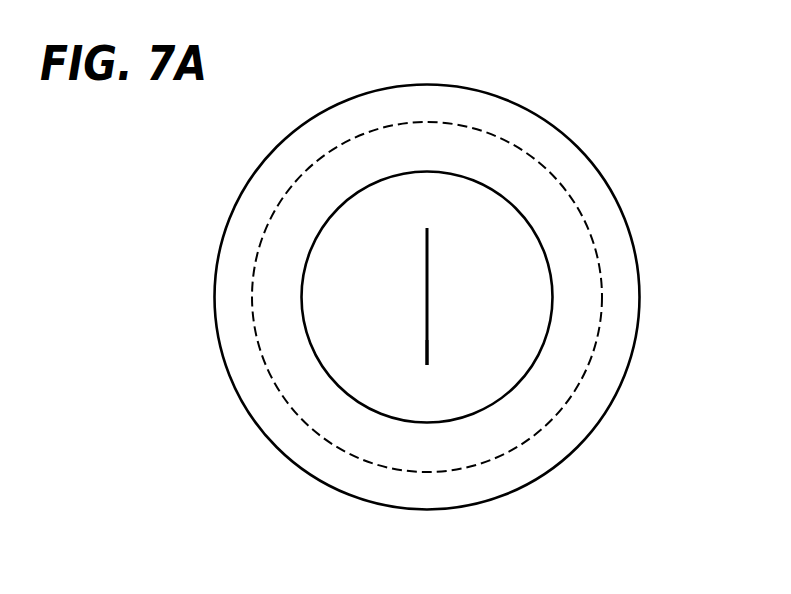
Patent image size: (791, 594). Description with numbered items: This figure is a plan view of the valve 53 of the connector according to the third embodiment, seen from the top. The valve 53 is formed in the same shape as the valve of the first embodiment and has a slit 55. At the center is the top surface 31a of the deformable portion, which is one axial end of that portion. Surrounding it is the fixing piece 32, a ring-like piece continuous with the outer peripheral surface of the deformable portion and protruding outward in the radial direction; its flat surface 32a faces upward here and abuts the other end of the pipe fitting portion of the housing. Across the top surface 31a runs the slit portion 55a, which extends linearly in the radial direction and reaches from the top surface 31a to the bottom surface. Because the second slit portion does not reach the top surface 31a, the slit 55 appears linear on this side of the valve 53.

The valve 53 is at (636, 91).
The fixing piece 32 is at (243, 408).
The flat surface 32a is at (632, 298).
The top surface 31a is at (490, 217).
The slit 55 is at (410, 247).
The slit portion 55a is at (424, 346).